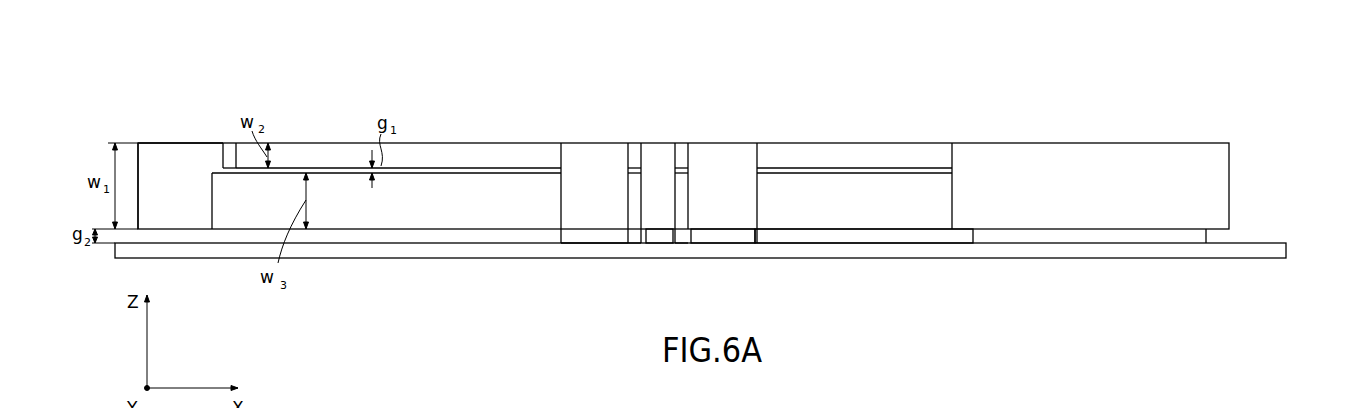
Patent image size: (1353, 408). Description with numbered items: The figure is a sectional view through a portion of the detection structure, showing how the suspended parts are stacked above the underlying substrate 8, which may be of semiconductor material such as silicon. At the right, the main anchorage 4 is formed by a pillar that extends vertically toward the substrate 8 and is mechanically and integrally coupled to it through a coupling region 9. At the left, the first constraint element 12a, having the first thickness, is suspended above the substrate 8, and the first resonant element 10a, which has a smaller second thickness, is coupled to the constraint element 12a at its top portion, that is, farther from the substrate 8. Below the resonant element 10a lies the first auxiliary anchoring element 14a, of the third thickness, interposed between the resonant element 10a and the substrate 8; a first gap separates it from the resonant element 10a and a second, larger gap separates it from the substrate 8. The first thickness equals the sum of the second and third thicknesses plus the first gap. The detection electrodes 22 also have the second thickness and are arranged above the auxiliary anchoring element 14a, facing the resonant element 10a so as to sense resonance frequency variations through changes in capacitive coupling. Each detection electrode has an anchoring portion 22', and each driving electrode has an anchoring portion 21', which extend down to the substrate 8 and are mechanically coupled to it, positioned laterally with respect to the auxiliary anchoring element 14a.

The main anchorage 4 is at (1080, 155).
The first constraint element 12a is at (168, 157).
The first resonant element 10a is at (229, 152).
The detection electrodes 22 is at (594, 119).
The first auxiliary anchoring element 14a is at (390, 218).
The anchoring portion of the detection electrodes 22' is at (667, 224).
The anchoring portion of the driving electrodes 21' is at (655, 224).
The coupling region 9 is at (1203, 237).
The substrate 8 is at (1252, 252).